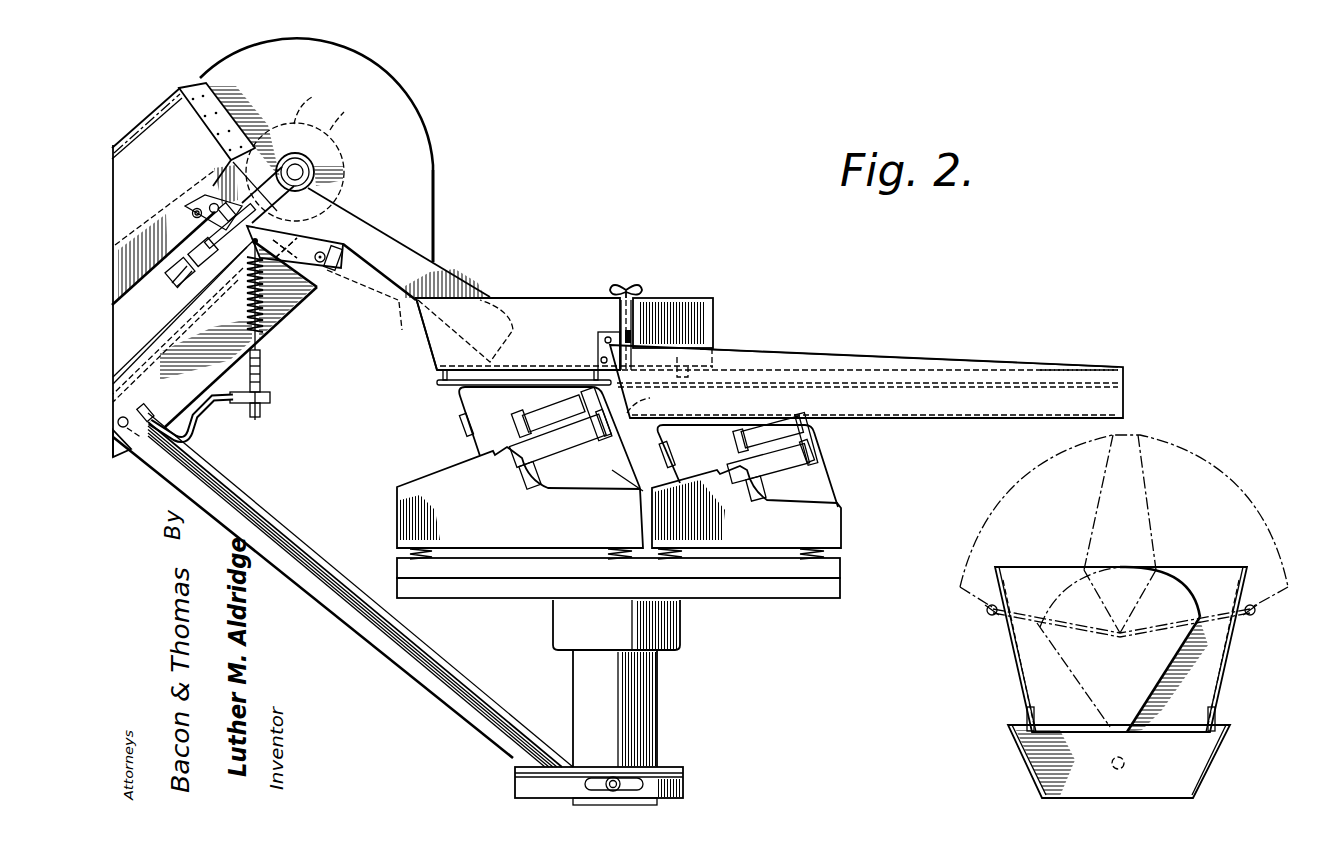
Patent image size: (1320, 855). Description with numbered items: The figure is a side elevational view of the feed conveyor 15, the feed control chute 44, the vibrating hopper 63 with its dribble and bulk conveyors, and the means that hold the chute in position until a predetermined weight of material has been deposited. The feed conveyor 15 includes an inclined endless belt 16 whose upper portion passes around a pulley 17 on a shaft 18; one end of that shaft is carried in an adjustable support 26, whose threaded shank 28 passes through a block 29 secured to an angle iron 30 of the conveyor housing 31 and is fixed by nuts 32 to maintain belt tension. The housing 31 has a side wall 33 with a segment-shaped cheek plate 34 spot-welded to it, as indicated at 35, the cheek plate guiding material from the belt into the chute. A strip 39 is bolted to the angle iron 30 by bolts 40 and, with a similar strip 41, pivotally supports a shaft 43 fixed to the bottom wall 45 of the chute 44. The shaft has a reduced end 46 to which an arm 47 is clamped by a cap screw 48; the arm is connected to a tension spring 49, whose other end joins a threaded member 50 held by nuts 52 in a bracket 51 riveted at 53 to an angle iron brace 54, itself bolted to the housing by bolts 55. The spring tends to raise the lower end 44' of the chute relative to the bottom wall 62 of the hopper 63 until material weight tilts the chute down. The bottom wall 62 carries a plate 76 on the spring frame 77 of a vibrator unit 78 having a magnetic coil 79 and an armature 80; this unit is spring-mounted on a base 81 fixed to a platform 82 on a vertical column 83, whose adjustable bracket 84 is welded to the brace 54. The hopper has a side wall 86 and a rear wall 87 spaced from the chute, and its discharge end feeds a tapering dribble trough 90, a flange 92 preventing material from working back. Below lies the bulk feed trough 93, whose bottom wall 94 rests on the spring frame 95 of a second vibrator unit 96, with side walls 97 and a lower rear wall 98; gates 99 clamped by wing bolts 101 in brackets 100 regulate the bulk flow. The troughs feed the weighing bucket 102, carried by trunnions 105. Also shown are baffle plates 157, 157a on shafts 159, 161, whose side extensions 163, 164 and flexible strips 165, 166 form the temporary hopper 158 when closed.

The feed conveyor 15 is at (402, 74).
The endless belt 16 is at (180, 340).
The pulley 17 is at (330, 133).
The shaft 18 is at (304, 165).
The adjustable support 26 is at (325, 178).
The threaded shank 28 is at (176, 284).
The block 29 is at (206, 262).
The angle iron 30 is at (140, 288).
The housing 31 is at (278, 313).
The nuts 32 is at (208, 246).
The side wall 33 is at (153, 148).
The cheek plate 34 is at (424, 199).
The spot weld 35 is at (218, 146).
The strip 39 is at (216, 193).
The bolts 40 is at (197, 209).
The strip 41 is at (285, 248).
The shaft 43 is at (333, 278).
The feed control chute 44 is at (453, 279).
The lower end of chute 44' is at (482, 331).
The bottom wall 45 is at (379, 296).
The reduced end of shaft 46 is at (318, 243).
The arm 47 is at (297, 225).
The cap screw 48 is at (333, 249).
The tension spring 49 is at (261, 343).
The threaded member 50 is at (262, 377).
The bracket 51 is at (212, 422).
The nuts 52 is at (271, 397).
The rivets 53 is at (173, 430).
The angle iron brace 54 is at (240, 505).
The bolts 55 is at (125, 428).
The bottom wall 62 is at (437, 368).
The vibrating hopper 63 is at (571, 292).
The plate 76 is at (438, 383).
The spring frame 77 is at (456, 420).
The vibrator unit 78 is at (417, 492).
The magnetic coil 79 is at (543, 412).
The armature 80 is at (609, 447).
The base 81 is at (405, 568).
The platform 82 is at (517, 594).
The vertical column 83 is at (649, 707).
The adjustable bracket 84 is at (682, 781).
The side wall 86 is at (527, 300).
The rear wall 87 is at (431, 352).
The dribble trough 90 is at (1057, 373).
The flange 92 is at (674, 362).
The bulk feed trough 93 is at (908, 355).
The bottom wall 94 is at (887, 420).
The spring frame 95 is at (817, 430).
The vibrator unit 96 is at (830, 528).
The side walls 97 is at (977, 363).
The rear wall 98 is at (649, 403).
The gates 99 is at (708, 298).
The bracket 100 is at (600, 332).
The wing bolt 101 is at (636, 288).
The weighing bucket 102 is at (1027, 767).
The trunnions 105 is at (1126, 765).
The baffle plate 157 is at (1040, 619).
The baffle plate 157a is at (1217, 613).
The temporary hopper 158 is at (1183, 572).
The shaft 159 is at (985, 614).
The shaft 161 is at (1255, 616).
The side extensions 163 is at (1173, 673).
The side extensions 164 is at (1087, 690).
The flexible strip 165 is at (1025, 717).
The flexible strip 166 is at (1220, 720).